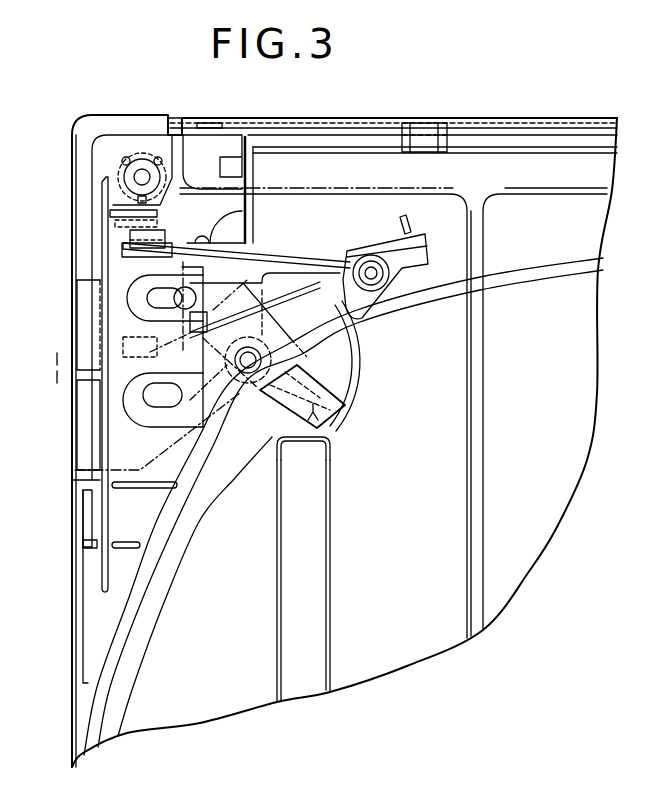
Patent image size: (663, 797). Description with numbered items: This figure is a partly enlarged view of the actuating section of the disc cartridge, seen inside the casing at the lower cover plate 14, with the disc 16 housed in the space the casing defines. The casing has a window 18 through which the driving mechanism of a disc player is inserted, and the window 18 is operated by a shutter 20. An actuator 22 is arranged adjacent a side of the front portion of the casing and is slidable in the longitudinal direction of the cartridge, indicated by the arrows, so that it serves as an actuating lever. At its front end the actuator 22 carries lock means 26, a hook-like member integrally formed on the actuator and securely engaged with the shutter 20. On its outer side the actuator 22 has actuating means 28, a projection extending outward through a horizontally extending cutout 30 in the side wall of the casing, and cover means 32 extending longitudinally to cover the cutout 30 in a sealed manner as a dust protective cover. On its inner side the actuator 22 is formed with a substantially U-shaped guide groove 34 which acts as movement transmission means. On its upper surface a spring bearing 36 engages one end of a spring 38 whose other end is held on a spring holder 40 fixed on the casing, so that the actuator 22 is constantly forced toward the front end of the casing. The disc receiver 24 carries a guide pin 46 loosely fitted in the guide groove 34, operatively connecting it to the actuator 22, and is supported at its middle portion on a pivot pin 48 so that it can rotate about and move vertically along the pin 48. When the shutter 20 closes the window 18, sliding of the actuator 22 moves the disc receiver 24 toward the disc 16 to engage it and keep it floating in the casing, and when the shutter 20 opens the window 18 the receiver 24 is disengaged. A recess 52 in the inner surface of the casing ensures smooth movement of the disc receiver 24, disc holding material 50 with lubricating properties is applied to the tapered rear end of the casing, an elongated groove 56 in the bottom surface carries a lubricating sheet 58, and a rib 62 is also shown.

The lower cover plate 14 is at (72, 637).
The disc 16 is at (117, 720).
The window 18 is at (483, 407).
The shutter 20 is at (427, 118).
The actuator 22 is at (197, 160).
The disc receiver 24 is at (335, 425).
The lock means 26 is at (237, 123).
The actuating means 28 is at (80, 320).
The cutout 30 is at (97, 428).
The cover means 32 is at (107, 187).
The guide groove 34 is at (120, 277).
The spring bearing 36 is at (130, 238).
The spring 38 is at (310, 250).
The spring holder 40 is at (368, 258).
The guide pin 46 is at (196, 298).
The pivot pin 48 is at (287, 327).
The disc holding material 50 is at (332, 437).
The recess 52 is at (360, 383).
The elongated groove 56 is at (277, 637).
The sheet 58 is at (277, 551).
The rib 62 is at (55, 569).